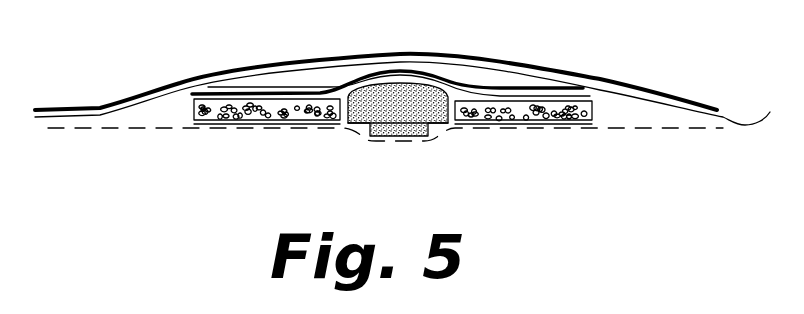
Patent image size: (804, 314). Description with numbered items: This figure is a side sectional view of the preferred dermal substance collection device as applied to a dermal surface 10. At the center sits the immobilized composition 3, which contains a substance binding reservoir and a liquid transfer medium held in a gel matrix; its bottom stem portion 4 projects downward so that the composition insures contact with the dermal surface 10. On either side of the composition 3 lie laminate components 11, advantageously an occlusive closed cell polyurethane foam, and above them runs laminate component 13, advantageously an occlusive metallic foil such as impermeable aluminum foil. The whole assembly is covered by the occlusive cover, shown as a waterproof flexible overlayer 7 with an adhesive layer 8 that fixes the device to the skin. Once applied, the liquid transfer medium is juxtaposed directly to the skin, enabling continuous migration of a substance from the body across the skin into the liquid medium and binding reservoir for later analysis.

The composition 3 is at (413, 91).
The bottom stem portion 4 is at (380, 137).
The waterproof flexible overlayer 7 is at (684, 107).
The adhesive layer 8 is at (195, 93).
The dermal surface 10 is at (500, 130).
The laminate components 11 is at (597, 103).
The laminate component 13 is at (298, 88).